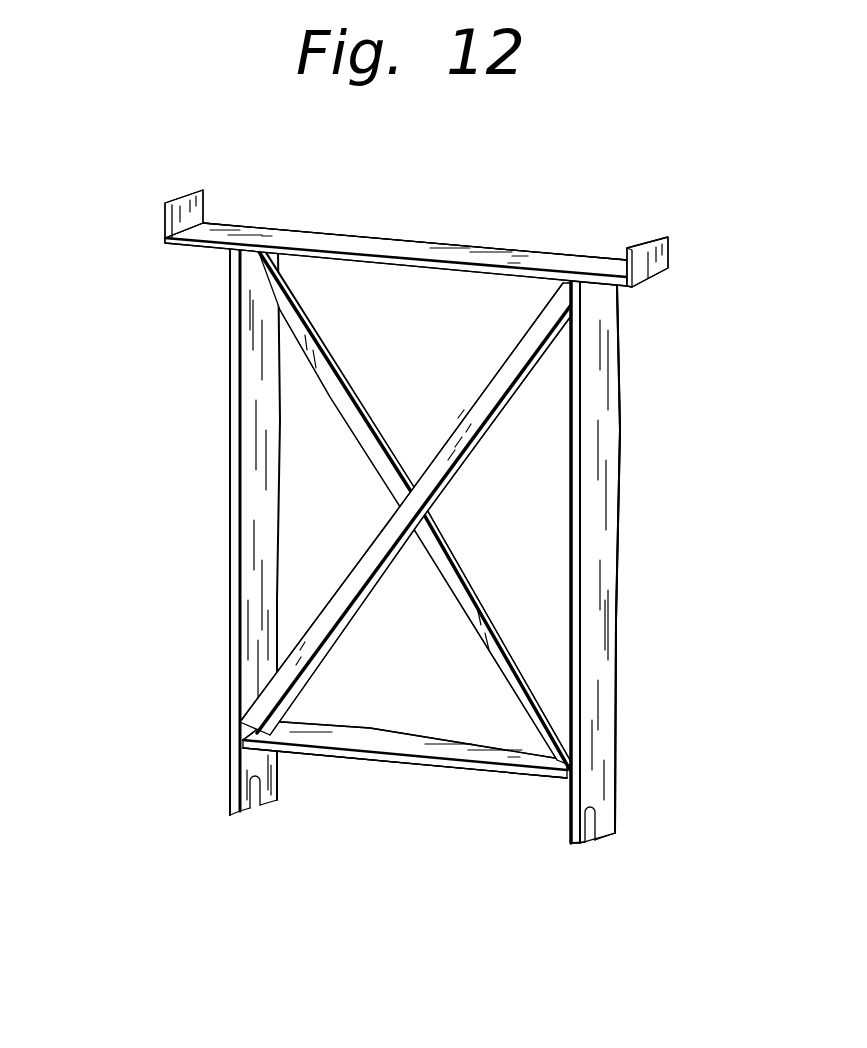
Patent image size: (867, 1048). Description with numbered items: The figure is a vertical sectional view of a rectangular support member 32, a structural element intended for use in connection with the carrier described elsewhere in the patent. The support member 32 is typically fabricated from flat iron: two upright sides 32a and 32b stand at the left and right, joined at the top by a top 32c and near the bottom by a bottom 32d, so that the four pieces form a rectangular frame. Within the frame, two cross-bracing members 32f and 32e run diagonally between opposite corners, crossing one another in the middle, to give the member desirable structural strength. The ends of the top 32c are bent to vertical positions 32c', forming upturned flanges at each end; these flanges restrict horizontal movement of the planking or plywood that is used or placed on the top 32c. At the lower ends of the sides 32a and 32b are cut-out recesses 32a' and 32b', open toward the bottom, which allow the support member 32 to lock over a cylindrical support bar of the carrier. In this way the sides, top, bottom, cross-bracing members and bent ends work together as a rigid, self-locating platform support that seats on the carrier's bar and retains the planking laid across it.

The rectangular support member 32 is at (646, 589).
The flat iron side 32a is at (194, 532).
The cut-out recess 32a' is at (331, 827).
The flat iron side 32b is at (654, 562).
The cut-out recess 32b' is at (651, 854).
The top 32c is at (396, 225).
The bent vertical end 32c' is at (415, 242).
The bottom 32d is at (430, 740).
The cross-bracing member 32e is at (437, 480).
The cross-bracing member 32f is at (335, 378).